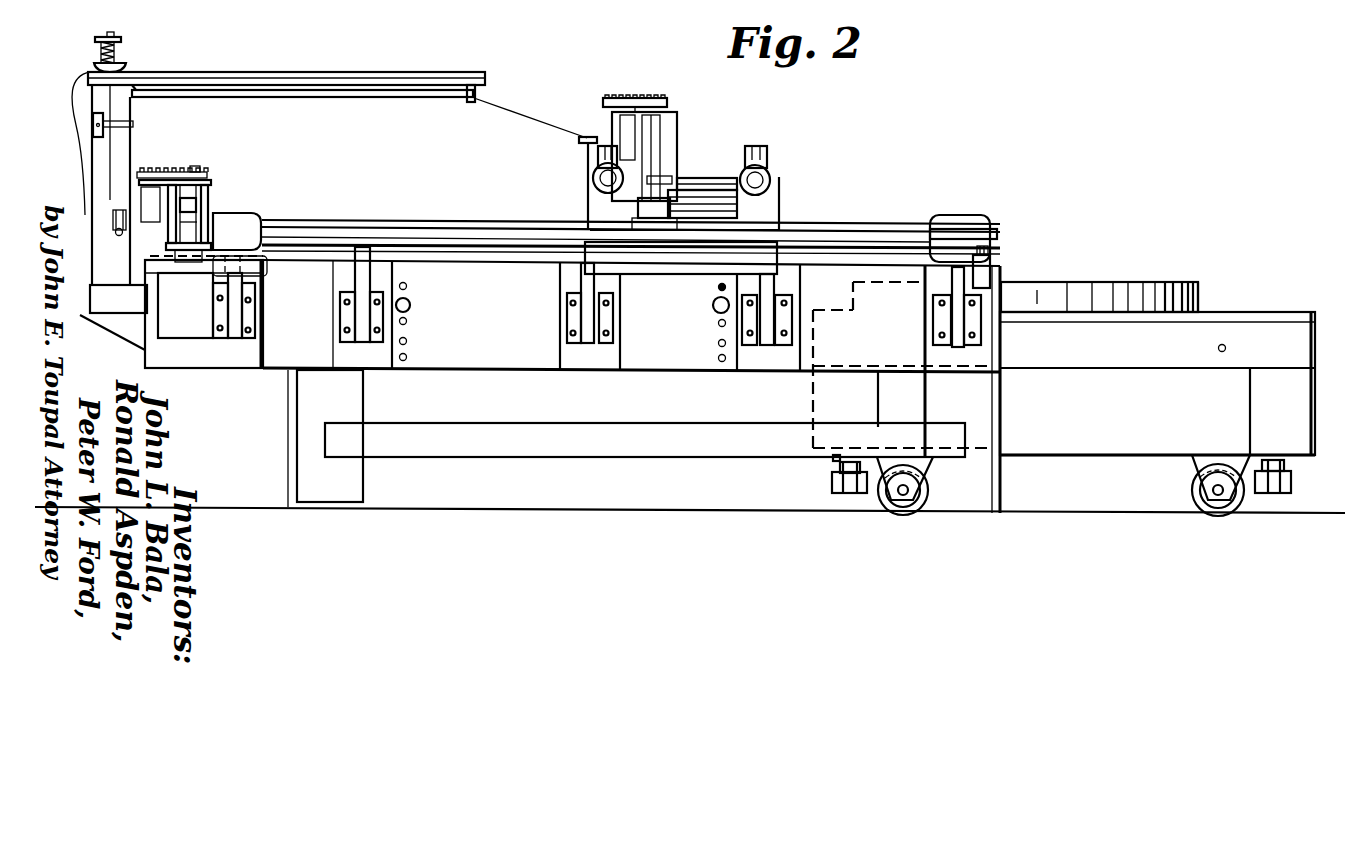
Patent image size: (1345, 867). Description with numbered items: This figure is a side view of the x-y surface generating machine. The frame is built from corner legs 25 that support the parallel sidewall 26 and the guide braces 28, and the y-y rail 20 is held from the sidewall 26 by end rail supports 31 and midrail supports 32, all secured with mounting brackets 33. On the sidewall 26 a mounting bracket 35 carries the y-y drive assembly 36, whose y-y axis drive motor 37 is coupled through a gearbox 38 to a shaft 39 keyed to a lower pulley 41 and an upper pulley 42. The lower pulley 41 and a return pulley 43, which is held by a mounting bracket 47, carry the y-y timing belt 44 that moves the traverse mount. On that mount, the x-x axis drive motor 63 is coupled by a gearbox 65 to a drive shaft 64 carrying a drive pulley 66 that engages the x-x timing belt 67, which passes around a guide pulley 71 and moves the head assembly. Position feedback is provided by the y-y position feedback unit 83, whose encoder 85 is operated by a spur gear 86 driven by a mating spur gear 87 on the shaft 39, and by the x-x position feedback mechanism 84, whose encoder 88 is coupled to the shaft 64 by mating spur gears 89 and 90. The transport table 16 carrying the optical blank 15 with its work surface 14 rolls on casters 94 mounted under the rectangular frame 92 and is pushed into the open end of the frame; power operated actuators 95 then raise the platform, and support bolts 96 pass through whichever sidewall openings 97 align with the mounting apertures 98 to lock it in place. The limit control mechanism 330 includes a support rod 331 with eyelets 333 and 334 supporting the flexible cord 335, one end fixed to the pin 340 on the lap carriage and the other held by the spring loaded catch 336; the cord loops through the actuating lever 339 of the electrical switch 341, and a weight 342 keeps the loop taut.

The work surface 14 is at (1099, 279).
The optical blank 15 is at (1205, 294).
The transport table 16 is at (1157, 401).
The y-y rail 20 is at (631, 212).
The corner leg 25 is at (644, 438).
The sidewall 26 is at (631, 386).
The guide brace 28 is at (645, 458).
The end rail support 31 is at (607, 222).
The midrail support 32 is at (631, 220).
The mounting bracket 33 is at (597, 297).
The mounting bracket 35 is at (183, 314).
The y-y drive assembly 36 is at (119, 333).
The y-y axis drive motor 37 is at (190, 303).
The gearbox 38 is at (185, 267).
The shaft 39 is at (174, 236).
The lower pulley 41 is at (197, 214).
The upper pulley 42 is at (217, 197).
The return pulley 43 is at (985, 223).
The y-y timing belt 44 is at (631, 220).
The mounting bracket 47 is at (1006, 263).
The x-x axis drive motor 63 is at (681, 232).
The drive shaft 64 is at (673, 142).
The gearbox 65 is at (685, 212).
The drive pulley 66 is at (639, 214).
The x-x timing belt 67 is at (707, 165).
The guide pulley 71 is at (752, 155).
The y-y position feedback unit 83 is at (172, 152).
The x-x position feedback mechanism 84 is at (647, 76).
The encoder 85 is at (113, 231).
The spur gear 86 is at (173, 159).
The mating spur gear 87 is at (204, 150).
The encoder 88 is at (598, 147).
The mating spur gear 89 is at (625, 89).
The mating spur gear 90 is at (676, 136).
The rectangular frame 92 is at (1157, 472).
The caster 94 is at (1063, 485).
The power operated jack or actuator 95 is at (1050, 475).
The support bolt 96 is at (562, 305).
The sidewall opening 97 is at (563, 318).
The mounting aperture 98 is at (1039, 365).
The limit control mechanism 330 is at (305, 61).
The support rod 331 is at (286, 63).
The eyelet 333 is at (142, 182).
The eyelet 334 is at (497, 90).
The flexible cord 335 is at (302, 105).
The spring loaded catch 336 is at (135, 51).
The actuating lever 339 is at (156, 114).
The pin 340 is at (535, 164).
The electrical switch 341 is at (68, 132).
The weight 342 is at (63, 146).